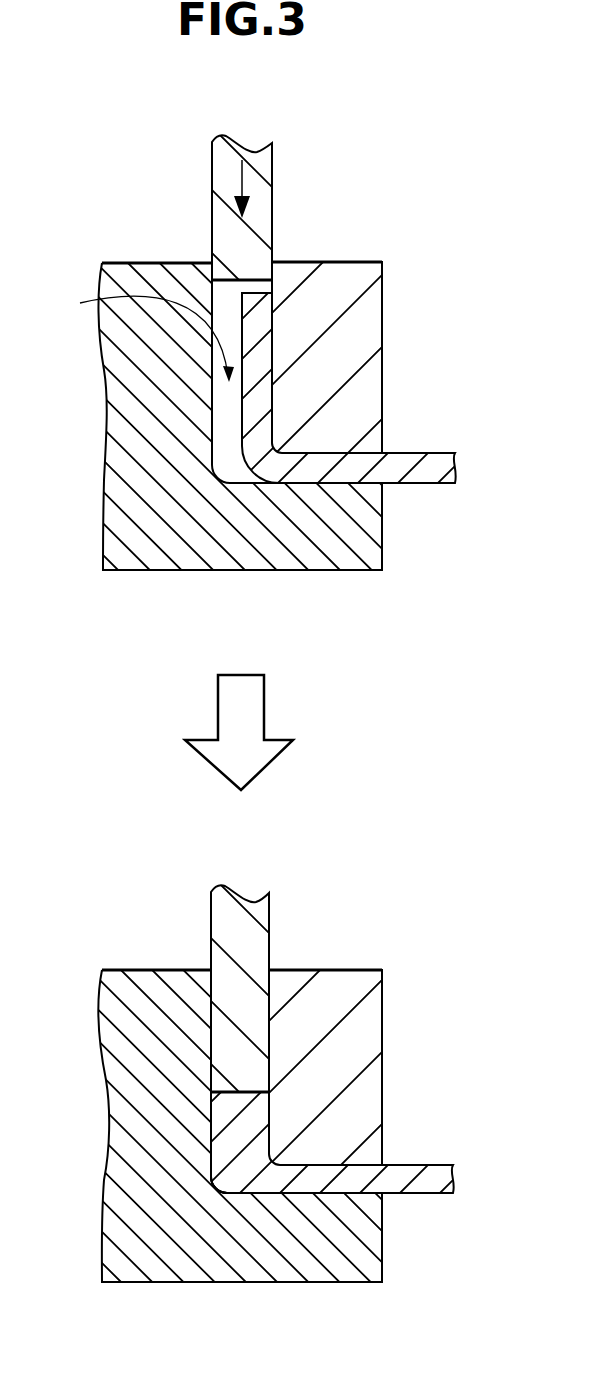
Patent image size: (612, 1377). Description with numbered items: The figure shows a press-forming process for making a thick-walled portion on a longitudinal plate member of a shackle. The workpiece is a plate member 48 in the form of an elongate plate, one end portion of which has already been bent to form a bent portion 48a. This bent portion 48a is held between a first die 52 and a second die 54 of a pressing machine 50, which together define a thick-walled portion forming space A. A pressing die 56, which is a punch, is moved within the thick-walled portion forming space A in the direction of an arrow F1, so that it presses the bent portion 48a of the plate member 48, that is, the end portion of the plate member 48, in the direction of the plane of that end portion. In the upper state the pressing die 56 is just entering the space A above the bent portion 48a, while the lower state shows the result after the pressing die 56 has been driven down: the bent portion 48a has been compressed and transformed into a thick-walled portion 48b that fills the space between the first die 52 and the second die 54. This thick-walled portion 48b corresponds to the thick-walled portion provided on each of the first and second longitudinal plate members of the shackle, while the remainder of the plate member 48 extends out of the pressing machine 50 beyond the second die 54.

The plate member 48 is at (434, 448).
The bent portion 48a is at (262, 322).
The thick-walled portion 48b is at (247, 1123).
The pressing machine 50 is at (338, 202).
The first die 52 is at (156, 276).
The second die 54 is at (360, 318).
The pressing die 56 is at (222, 209).
The arrow F1 is at (242, 183).
The thick-walled portion forming space A is at (147, 338).